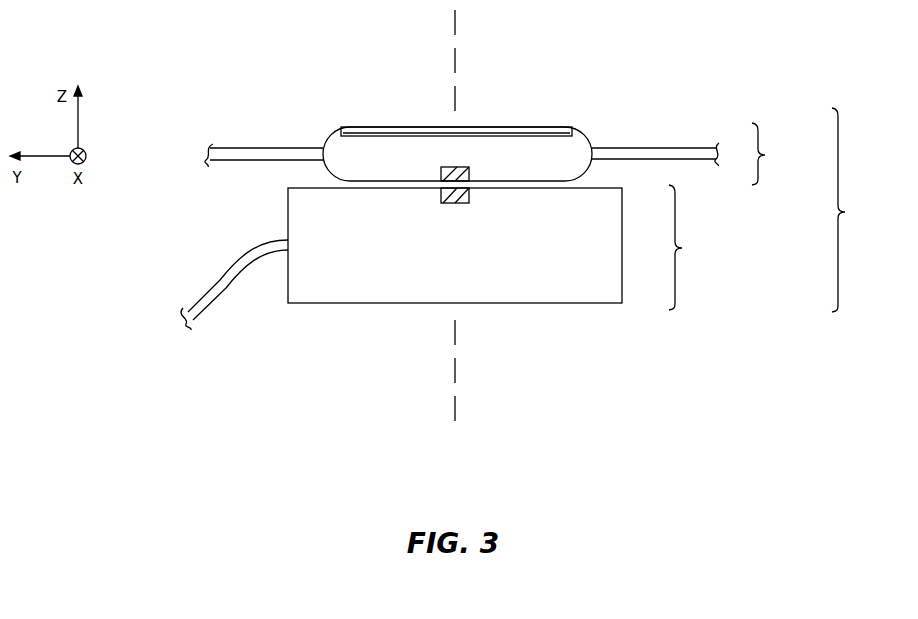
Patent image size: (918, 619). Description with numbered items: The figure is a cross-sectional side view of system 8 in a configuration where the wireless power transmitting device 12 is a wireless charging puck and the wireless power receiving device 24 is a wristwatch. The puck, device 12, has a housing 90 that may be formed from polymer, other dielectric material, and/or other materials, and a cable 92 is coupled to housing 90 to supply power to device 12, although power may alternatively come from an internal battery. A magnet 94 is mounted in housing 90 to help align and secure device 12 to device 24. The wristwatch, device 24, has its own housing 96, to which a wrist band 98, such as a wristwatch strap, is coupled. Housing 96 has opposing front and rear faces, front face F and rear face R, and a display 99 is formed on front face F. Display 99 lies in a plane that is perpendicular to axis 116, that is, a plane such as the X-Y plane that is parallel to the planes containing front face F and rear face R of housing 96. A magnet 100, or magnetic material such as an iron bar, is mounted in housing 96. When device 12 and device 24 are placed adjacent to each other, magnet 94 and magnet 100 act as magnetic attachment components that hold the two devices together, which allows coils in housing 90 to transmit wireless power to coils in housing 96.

The system 8 is at (848, 210).
The wireless power transmitting device 12 is at (688, 247).
The wireless power receiving device 24 is at (771, 154).
The housing 90 is at (380, 303).
The cable 92 is at (218, 292).
The magnet 94 is at (469, 196).
The housing 96 is at (590, 136).
The wrist band 98 is at (258, 147).
The display 99 is at (385, 126).
The magnet 100 is at (469, 174).
The axis 116 is at (457, 28).
The front face F is at (521, 108).
The rear face R is at (357, 182).